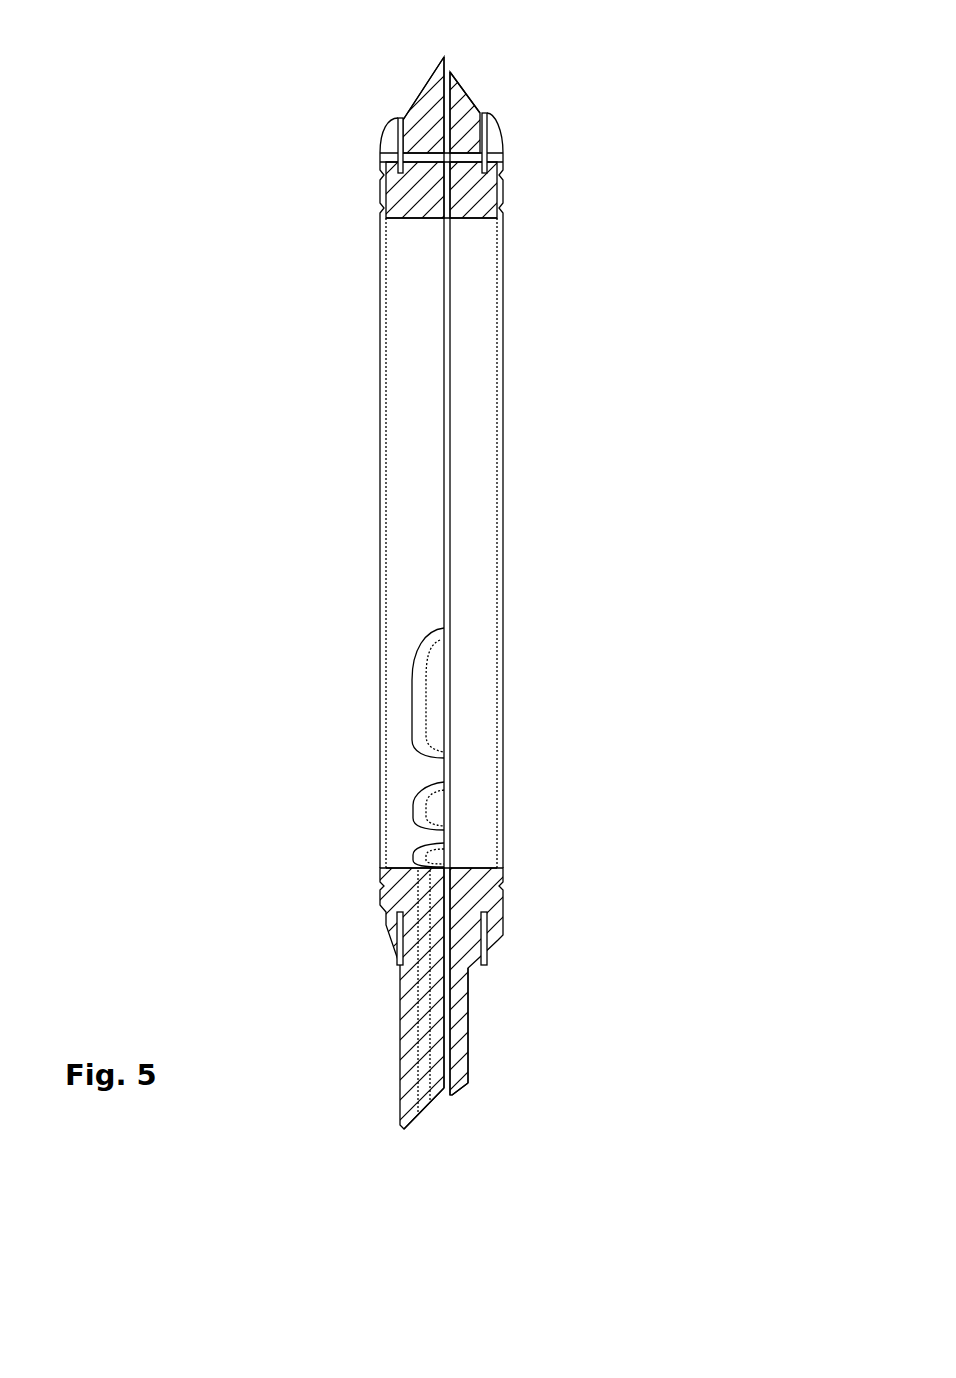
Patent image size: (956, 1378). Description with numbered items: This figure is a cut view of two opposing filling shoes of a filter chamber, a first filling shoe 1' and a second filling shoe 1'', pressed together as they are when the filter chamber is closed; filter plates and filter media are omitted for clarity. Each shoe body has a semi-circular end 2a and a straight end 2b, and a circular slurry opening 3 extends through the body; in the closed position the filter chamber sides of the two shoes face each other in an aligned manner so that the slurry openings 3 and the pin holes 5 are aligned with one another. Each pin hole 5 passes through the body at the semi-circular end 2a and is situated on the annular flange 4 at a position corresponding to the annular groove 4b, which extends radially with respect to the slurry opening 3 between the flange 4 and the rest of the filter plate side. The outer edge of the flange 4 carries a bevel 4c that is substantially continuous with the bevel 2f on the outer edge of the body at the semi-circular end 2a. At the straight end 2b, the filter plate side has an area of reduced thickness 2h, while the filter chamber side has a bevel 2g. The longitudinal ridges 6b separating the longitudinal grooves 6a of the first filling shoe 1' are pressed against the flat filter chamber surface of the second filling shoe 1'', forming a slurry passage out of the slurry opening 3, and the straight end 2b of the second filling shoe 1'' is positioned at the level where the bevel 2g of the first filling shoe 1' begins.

The first filling shoe 1' is at (261, 572).
The second filling shoe 1'' is at (637, 583).
The semi-circular end 2a is at (441, 57).
The bevel 2f is at (413, 97).
The straight end 2b is at (412, 1128).
The bevel 2g is at (418, 1130).
The area of reduced thickness 2h is at (467, 1040).
The slurry opening 3 is at (403, 382).
The annular flange 4 is at (383, 910).
The annular groove 4b is at (398, 133).
The bevel 4c is at (395, 957).
The pin hole 5 is at (392, 155).
The longitudinal grooves 6a is at (430, 707).
The longitudinal ridges 6b is at (442, 776).